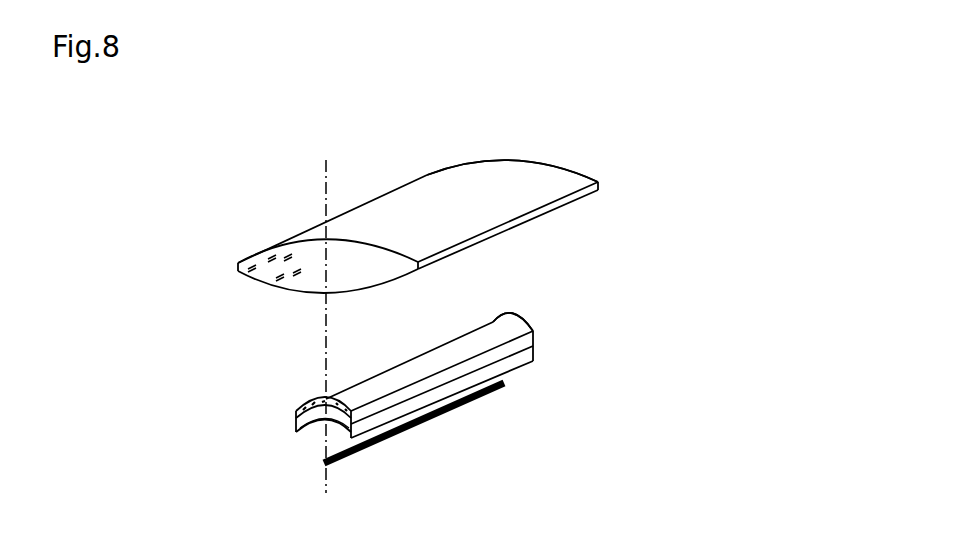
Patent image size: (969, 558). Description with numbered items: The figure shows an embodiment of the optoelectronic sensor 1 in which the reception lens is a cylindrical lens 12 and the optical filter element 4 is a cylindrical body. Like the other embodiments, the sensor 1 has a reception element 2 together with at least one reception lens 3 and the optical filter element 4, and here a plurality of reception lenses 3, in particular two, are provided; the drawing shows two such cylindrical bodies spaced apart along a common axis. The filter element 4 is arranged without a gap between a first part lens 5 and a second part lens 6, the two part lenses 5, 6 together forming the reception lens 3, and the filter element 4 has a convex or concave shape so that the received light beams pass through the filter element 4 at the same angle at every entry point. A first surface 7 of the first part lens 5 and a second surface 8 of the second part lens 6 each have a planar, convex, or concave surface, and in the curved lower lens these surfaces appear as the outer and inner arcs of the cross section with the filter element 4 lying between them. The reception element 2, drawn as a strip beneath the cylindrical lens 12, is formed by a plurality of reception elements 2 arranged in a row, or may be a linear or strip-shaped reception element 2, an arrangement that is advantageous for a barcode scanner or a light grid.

The optoelectronic sensor 1 is at (683, 100).
The reception element 2 is at (470, 403).
The reception lens 3 is at (540, 178).
The optical filter element 4 is at (410, 398).
The first part lens 5 is at (297, 412).
The second part lens 6 is at (302, 430).
The first surface 7 is at (307, 400).
The second surface 8 is at (312, 430).
The cylindrical lens 12 is at (470, 190).